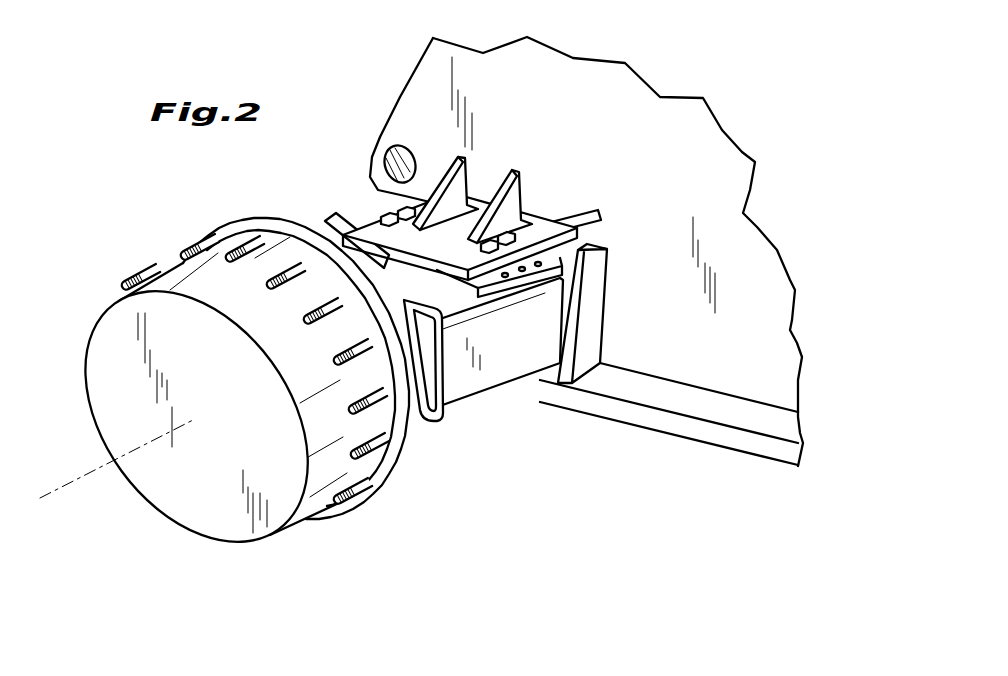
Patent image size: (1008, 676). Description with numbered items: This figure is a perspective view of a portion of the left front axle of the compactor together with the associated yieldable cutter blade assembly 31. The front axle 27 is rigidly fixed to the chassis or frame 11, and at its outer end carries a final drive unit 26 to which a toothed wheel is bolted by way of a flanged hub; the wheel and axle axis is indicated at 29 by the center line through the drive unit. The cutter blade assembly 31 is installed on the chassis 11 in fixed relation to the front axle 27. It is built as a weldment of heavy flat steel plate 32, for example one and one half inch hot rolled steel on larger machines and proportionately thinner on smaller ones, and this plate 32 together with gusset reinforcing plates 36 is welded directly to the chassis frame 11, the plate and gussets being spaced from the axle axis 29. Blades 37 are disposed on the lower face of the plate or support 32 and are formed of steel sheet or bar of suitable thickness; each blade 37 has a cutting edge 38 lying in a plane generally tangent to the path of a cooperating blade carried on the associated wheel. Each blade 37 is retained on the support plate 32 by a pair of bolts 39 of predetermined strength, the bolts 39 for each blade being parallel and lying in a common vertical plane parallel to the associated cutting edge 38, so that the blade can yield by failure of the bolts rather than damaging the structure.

The chassis 11 is at (673, 147).
The final drive unit 26 is at (207, 510).
The front axle 27 is at (468, 408).
The axle axis 29 is at (78, 480).
The cutter blade assembly 31 is at (573, 191).
The plate 32 is at (456, 228).
The gusset reinforcing plates 36 is at (432, 202).
The blades 37 is at (383, 258).
The cutting edge 38 is at (520, 290).
The bolts 39 is at (402, 216).